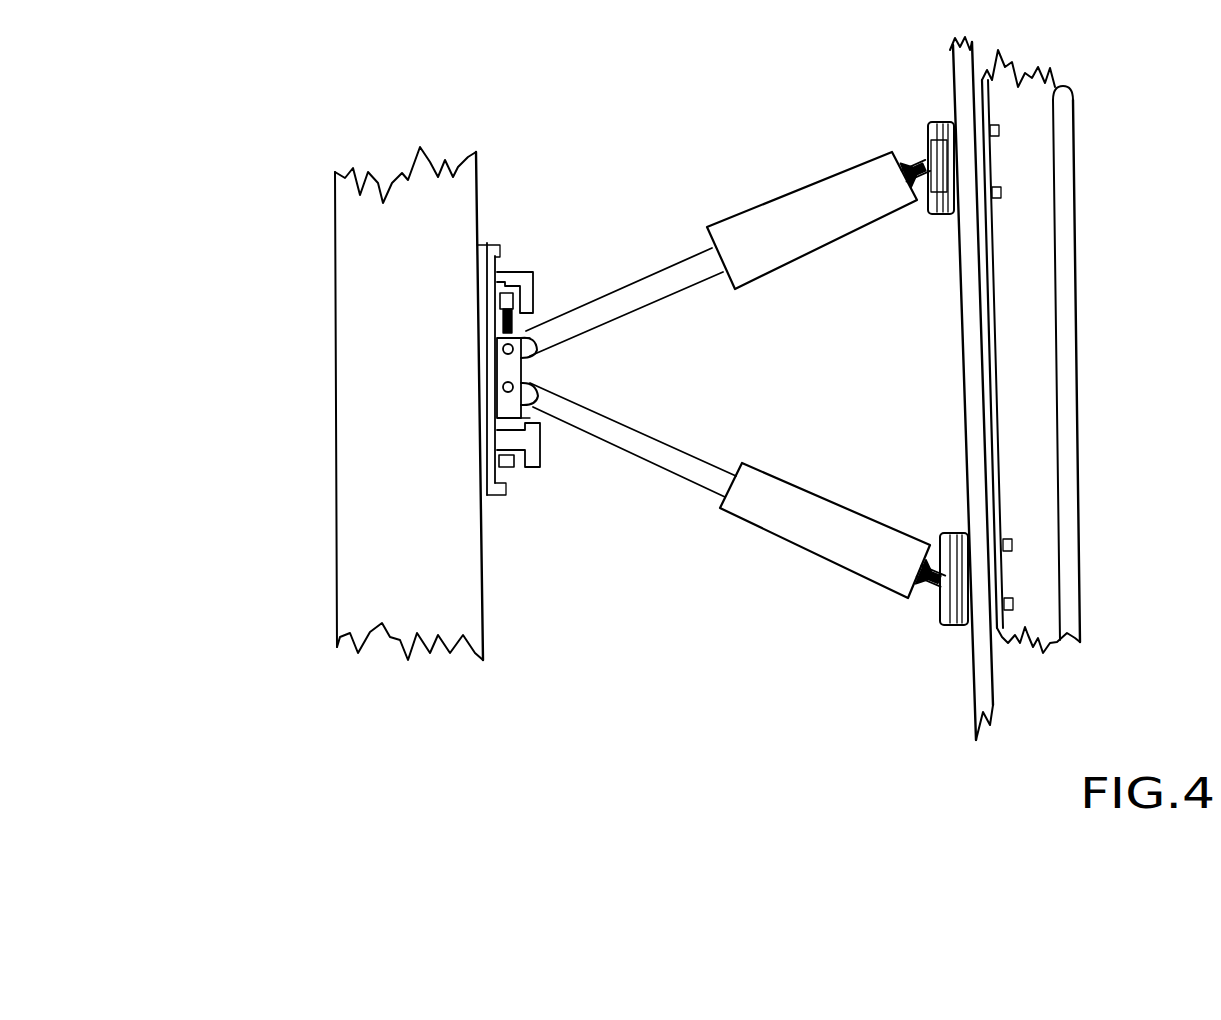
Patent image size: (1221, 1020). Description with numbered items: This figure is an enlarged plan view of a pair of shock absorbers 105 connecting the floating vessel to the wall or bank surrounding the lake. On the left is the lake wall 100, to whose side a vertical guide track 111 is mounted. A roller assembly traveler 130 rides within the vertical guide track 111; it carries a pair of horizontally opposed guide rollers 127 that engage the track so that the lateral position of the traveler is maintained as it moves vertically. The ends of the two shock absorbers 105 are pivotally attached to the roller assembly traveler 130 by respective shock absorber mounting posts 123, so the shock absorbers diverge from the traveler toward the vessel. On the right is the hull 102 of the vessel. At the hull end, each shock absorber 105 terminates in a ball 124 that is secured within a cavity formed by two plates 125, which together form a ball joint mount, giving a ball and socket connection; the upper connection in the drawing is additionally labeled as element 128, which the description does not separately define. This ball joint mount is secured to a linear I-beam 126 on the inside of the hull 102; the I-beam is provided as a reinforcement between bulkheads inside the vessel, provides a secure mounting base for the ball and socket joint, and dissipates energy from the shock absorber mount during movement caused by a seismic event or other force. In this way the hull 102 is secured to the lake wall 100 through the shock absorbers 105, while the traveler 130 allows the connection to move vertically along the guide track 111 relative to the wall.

The lake wall 100 is at (395, 362).
The hull 102 is at (975, 395).
The shock absorber 105 is at (732, 237).
The vertical guide track 111 is at (492, 493).
The shock absorber mounting post 123 is at (507, 347).
The ball 124 is at (940, 598).
The plate 125 is at (948, 215).
The linear I-beam 126 is at (1033, 510).
The guide roller 127 is at (523, 265).
The mounting bracket 128 is at (928, 135).
The roller assembly traveler 130 is at (510, 364).